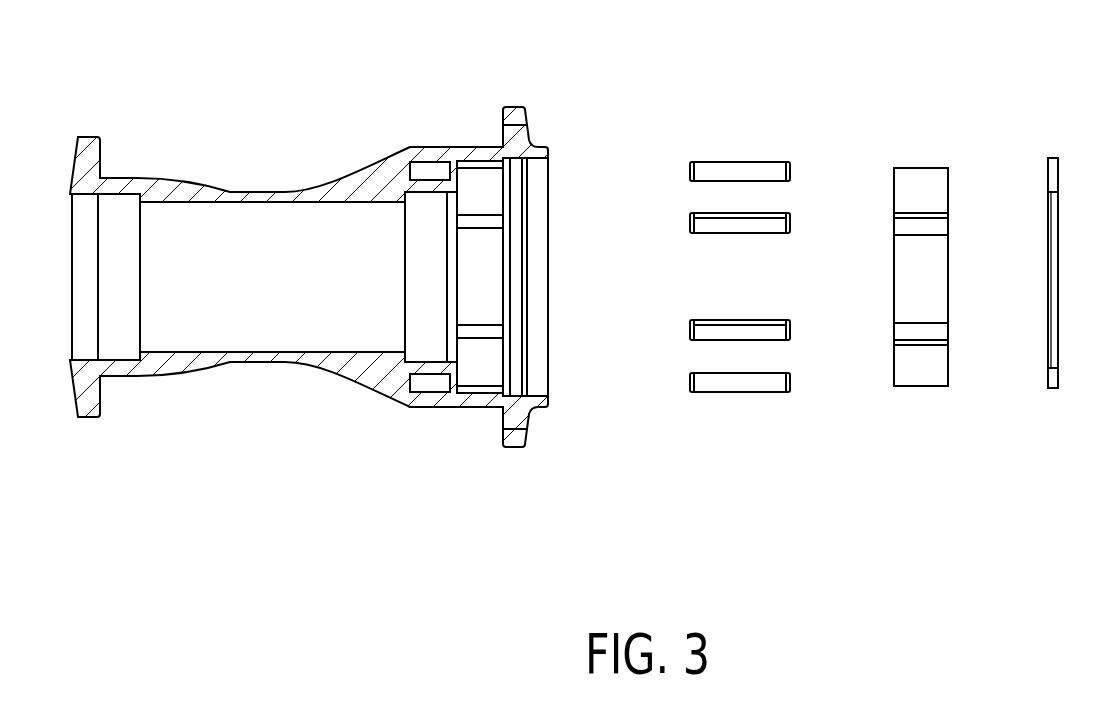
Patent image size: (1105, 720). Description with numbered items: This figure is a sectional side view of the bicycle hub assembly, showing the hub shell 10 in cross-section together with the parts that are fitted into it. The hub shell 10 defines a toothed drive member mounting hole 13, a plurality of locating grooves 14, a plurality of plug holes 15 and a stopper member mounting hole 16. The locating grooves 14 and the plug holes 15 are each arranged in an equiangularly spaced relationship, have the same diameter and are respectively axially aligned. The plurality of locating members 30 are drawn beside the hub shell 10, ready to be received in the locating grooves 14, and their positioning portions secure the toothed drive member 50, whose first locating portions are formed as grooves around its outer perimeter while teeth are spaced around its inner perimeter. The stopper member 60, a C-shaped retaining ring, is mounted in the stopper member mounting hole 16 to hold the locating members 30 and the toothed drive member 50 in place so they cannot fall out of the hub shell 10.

The hub shell 10 is at (340, 255).
The toothed drive member mounting hole 13 is at (495, 302).
The locating grooves 14 is at (482, 162).
The plug holes 15 is at (433, 172).
The stopper member mounting hole 16 is at (515, 392).
The locating members 30 is at (739, 120).
The toothed drive member 50 is at (942, 210).
The stopper member 60 is at (1058, 127).